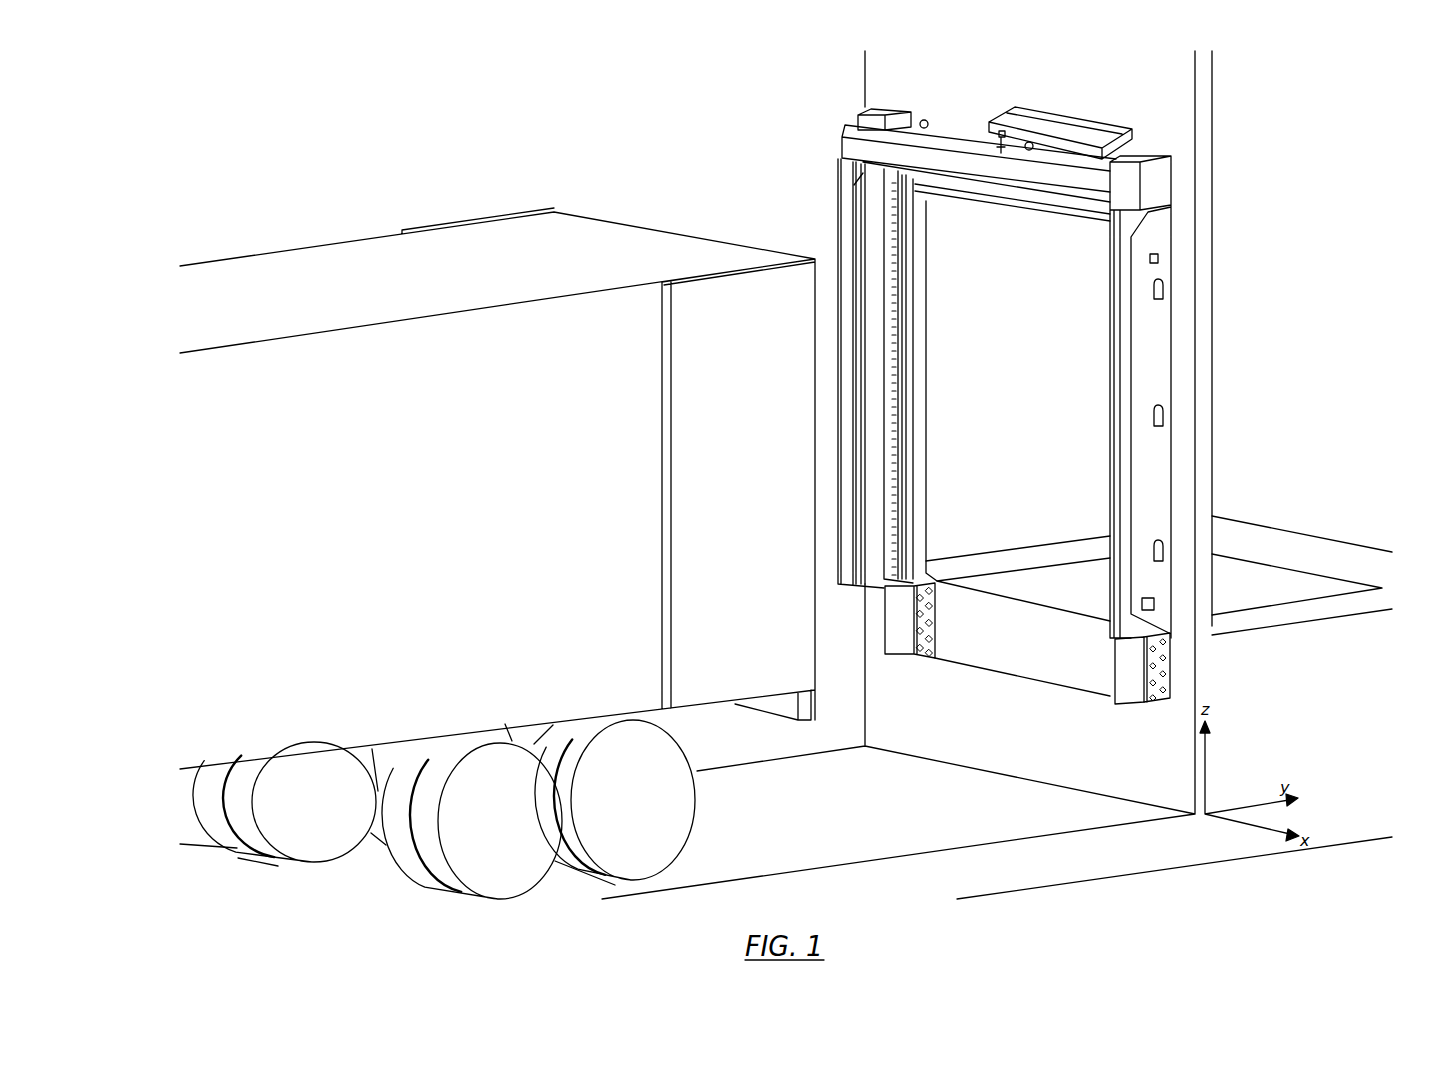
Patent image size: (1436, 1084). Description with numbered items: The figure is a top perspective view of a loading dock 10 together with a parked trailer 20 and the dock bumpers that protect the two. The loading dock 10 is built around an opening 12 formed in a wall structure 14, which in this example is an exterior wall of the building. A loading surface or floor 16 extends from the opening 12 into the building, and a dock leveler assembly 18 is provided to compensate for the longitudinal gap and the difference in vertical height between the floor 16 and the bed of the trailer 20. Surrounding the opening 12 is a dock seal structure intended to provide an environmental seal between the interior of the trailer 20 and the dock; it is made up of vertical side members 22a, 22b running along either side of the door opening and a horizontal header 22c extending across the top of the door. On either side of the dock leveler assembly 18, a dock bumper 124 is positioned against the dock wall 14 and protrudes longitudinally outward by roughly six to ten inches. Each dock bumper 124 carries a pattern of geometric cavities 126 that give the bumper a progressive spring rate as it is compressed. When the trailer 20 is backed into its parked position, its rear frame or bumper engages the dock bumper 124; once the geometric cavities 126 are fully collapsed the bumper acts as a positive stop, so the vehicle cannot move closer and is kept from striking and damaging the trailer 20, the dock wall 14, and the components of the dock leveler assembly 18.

The loading dock 10 is at (797, 141).
The opening 12 is at (1040, 340).
The wall structure 14 is at (1158, 101).
The floor 16 is at (1262, 541).
The dock leveler assembly 18 is at (1055, 580).
The trailer 20 is at (623, 240).
The vertical side member 22a is at (1155, 323).
The vertical side member 22b is at (873, 220).
The horizontal header 22c is at (945, 138).
The dock bumper 124 is at (899, 655).
The geometric cavities 126 is at (1148, 658).